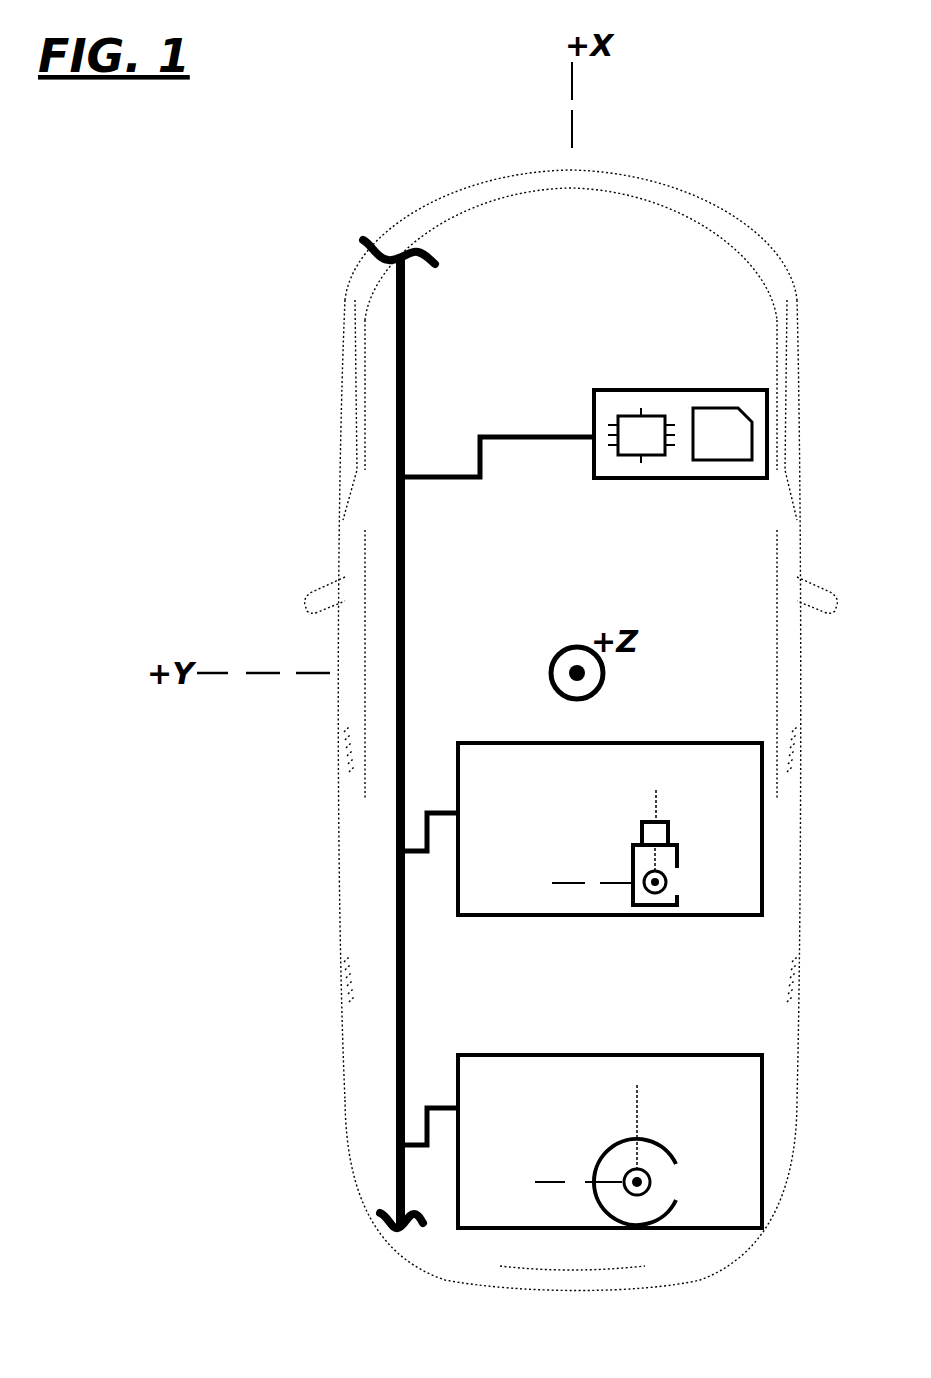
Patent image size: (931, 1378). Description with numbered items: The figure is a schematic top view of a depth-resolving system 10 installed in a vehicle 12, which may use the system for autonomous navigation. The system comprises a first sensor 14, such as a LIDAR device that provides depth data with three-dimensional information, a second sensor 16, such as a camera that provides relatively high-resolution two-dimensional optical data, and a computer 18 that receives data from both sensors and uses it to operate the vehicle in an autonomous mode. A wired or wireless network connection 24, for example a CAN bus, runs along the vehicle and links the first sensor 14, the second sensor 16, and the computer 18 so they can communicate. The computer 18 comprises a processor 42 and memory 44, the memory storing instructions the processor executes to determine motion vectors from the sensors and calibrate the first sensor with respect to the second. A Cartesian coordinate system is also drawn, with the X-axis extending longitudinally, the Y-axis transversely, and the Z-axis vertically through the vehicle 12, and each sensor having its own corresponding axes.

The depth-resolving system 10 is at (374, 493).
The vehicle 12 is at (494, 168).
The first sensor 14 is at (610, 1141).
The second sensor 16 is at (610, 829).
The computer 18 is at (680, 413).
The network connection 24 is at (395, 366).
The processor 42 is at (641, 435).
The memory 44 is at (722, 434).